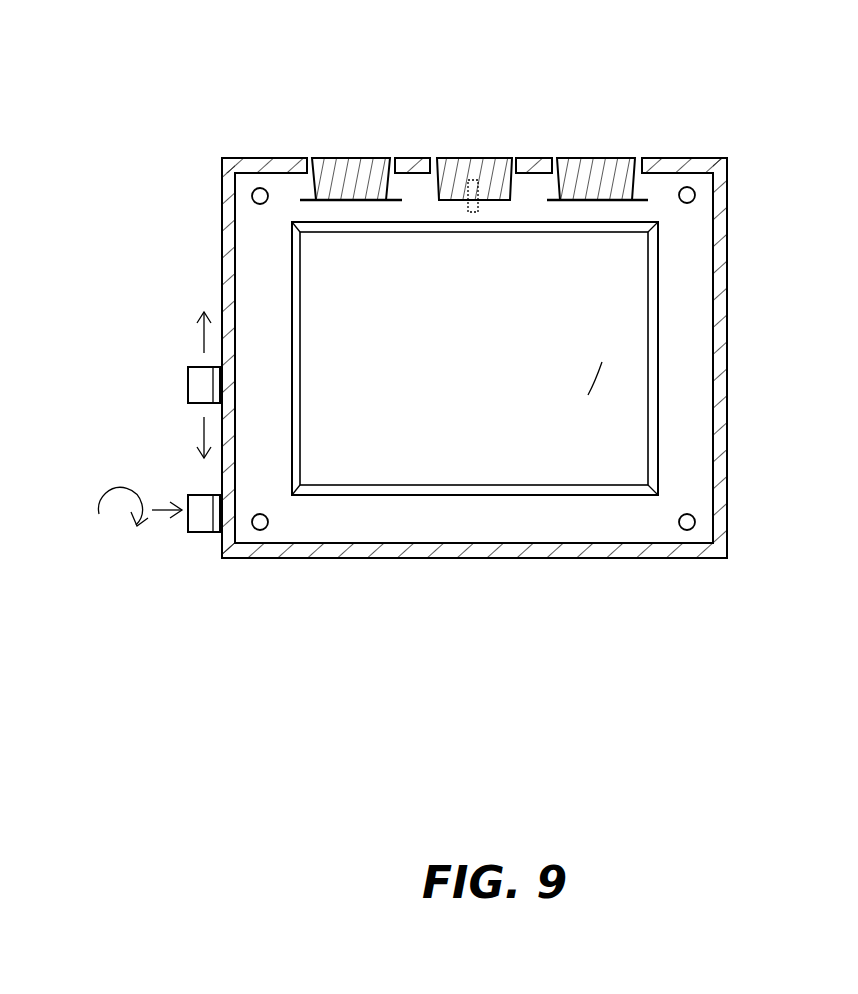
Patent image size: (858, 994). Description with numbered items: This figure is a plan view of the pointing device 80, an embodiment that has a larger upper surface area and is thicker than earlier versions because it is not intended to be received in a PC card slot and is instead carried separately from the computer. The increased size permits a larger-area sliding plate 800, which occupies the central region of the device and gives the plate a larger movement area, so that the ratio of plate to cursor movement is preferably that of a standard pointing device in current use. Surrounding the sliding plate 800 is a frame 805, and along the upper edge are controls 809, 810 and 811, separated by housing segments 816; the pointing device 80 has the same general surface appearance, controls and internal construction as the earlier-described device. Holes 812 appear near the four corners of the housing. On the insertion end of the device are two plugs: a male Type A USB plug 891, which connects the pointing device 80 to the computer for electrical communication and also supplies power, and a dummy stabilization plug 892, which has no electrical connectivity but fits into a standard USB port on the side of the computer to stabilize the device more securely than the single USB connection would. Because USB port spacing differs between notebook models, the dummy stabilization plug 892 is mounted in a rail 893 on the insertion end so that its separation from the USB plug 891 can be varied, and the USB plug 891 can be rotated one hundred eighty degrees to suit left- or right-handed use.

The pointing device 80 is at (455, 325).
The sliding plate 800 is at (597, 380).
The display frame 805 is at (658, 338).
The control key 809 is at (613, 158).
The control key 810 is at (350, 158).
The control key 811 is at (492, 158).
The mounting hole 812 is at (252, 196).
The housing segment 816 is at (398, 158).
The male Type A USB plug 891 is at (188, 525).
The dummy stabilization plug 892 is at (188, 387).
The rail 893 is at (220, 263).